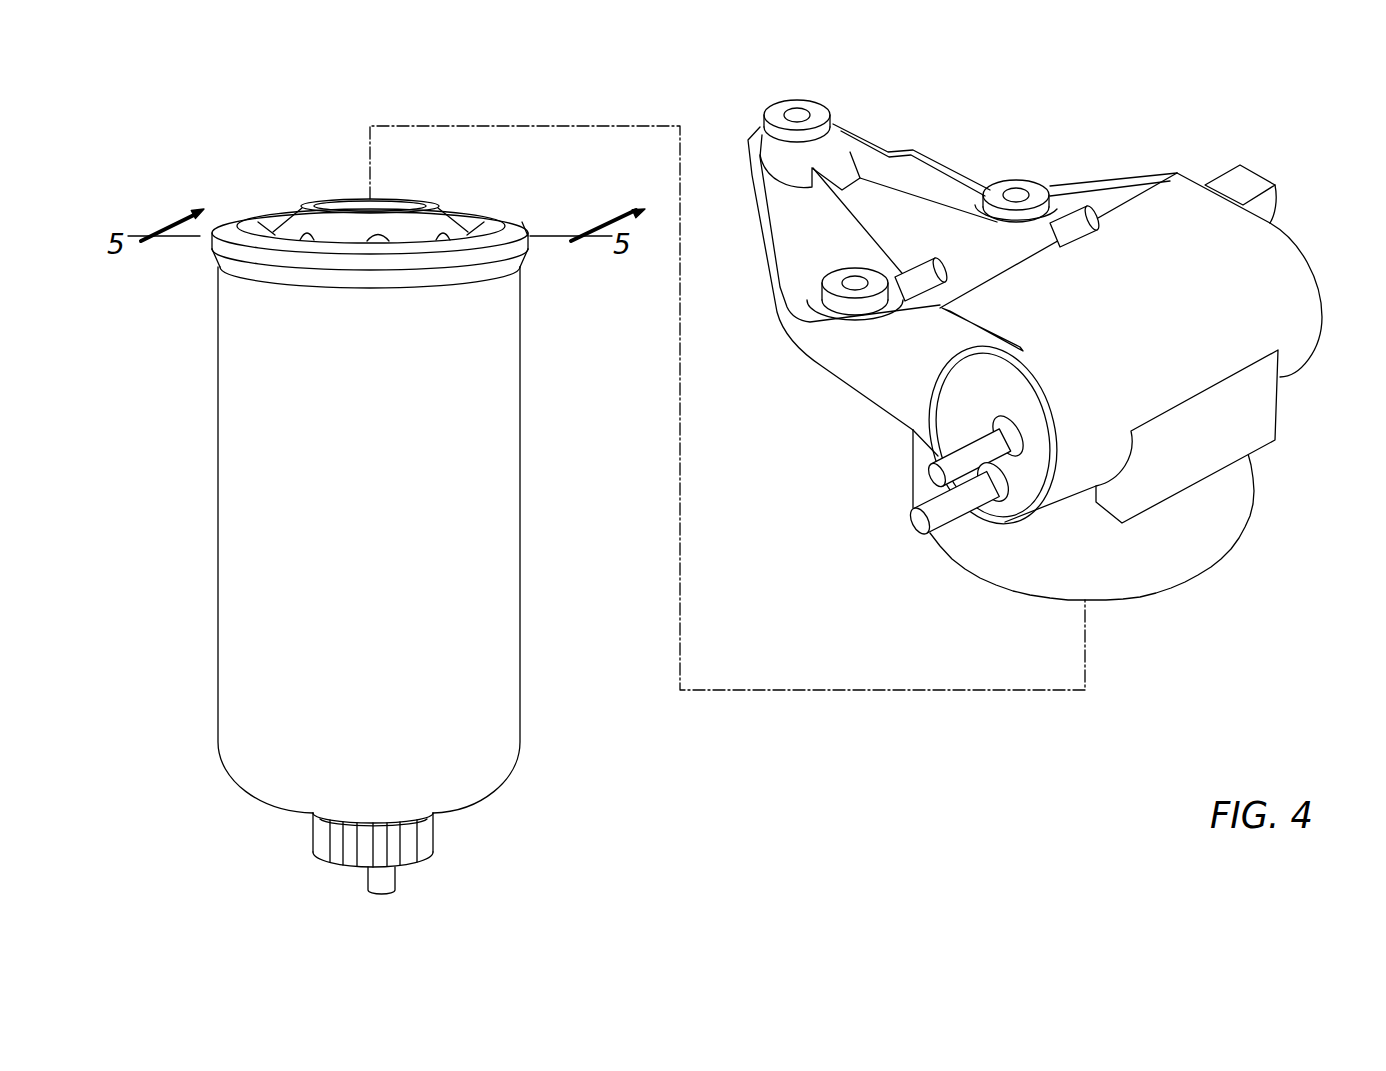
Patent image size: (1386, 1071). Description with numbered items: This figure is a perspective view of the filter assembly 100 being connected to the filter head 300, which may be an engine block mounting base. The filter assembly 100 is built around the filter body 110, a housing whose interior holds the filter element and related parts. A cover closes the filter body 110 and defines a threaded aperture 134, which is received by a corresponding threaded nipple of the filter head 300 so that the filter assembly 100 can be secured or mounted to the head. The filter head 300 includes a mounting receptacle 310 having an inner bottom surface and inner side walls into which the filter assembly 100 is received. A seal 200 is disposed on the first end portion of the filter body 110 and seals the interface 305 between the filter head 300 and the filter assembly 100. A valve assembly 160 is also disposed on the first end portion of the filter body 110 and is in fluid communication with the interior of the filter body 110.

The filter assembly 100 is at (172, 108).
The filter body 110 is at (218, 588).
The threaded aperture 134 is at (400, 200).
The valve assembly 160 is at (312, 838).
The seal 200 is at (210, 241).
The filter head 300 is at (1302, 488).
The interface 305 is at (519, 210).
The mounting receptacle 310 is at (1203, 552).